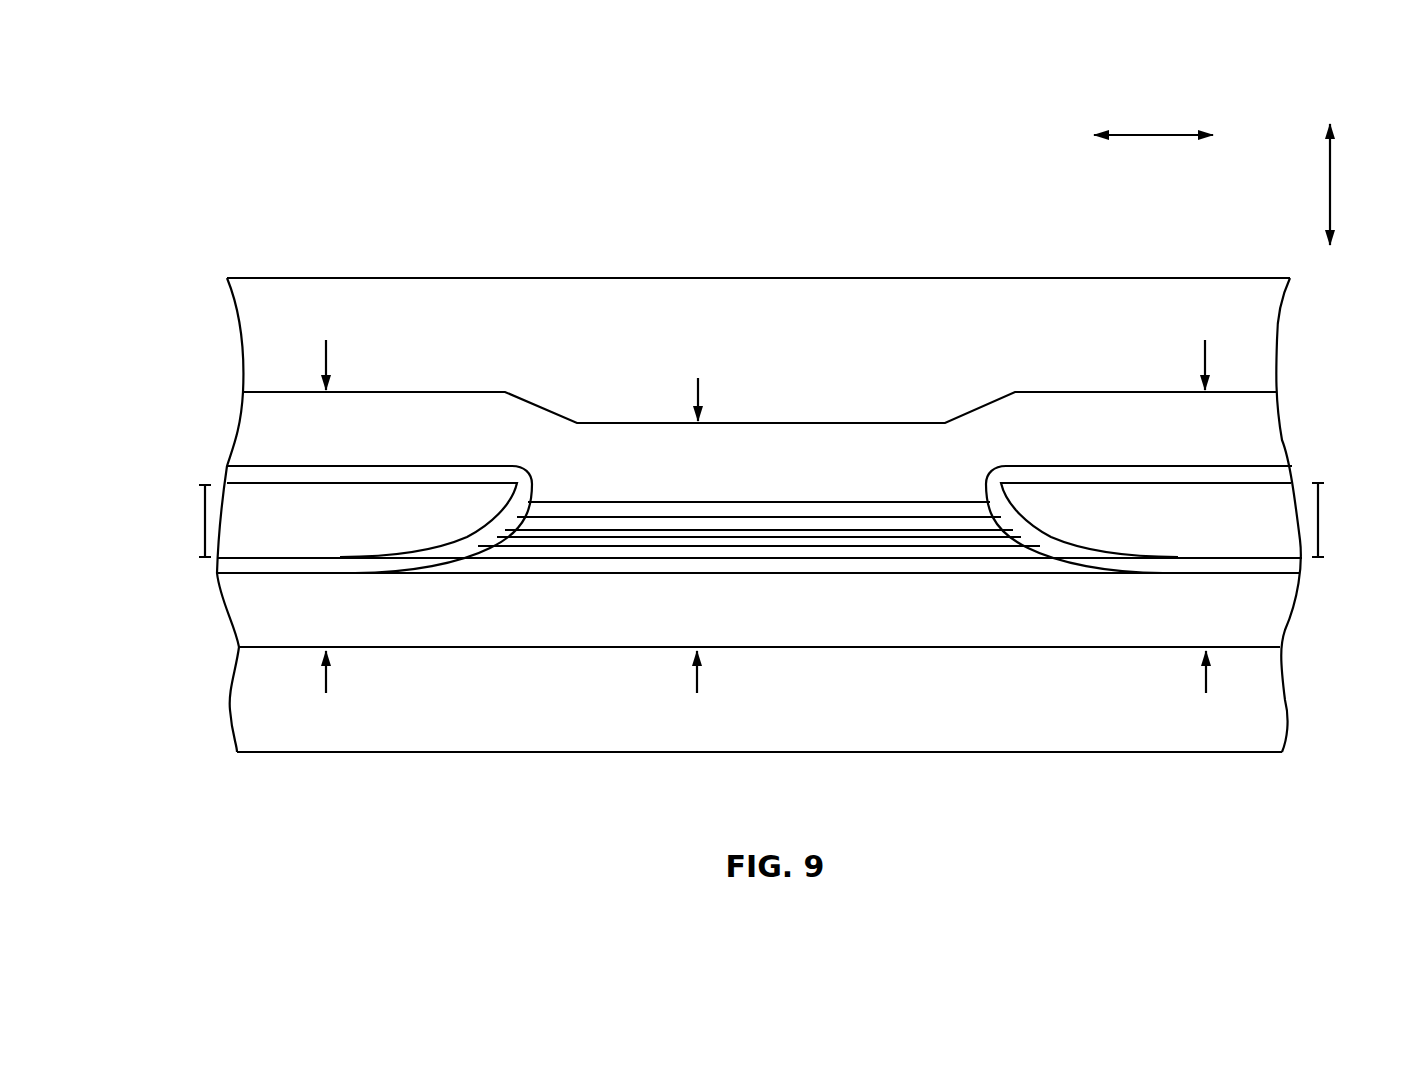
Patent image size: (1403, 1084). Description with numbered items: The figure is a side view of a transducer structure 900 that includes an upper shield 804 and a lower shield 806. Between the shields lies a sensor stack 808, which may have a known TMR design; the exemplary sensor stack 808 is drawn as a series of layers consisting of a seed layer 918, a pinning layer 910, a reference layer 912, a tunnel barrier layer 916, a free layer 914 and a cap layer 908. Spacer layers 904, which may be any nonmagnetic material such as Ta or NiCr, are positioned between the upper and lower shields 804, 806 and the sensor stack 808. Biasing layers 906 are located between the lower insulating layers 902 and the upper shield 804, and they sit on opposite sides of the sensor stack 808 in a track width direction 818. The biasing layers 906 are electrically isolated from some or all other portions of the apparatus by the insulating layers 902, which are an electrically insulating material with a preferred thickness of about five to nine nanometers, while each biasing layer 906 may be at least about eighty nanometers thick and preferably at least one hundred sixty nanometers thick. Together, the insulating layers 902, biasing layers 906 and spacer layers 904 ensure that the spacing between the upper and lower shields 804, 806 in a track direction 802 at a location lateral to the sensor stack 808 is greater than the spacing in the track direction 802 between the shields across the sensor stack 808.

The transducer structure 900 is at (272, 183).
The track direction 802 is at (1330, 176).
The track width direction 818 is at (1155, 135).
The upper shield 804 is at (1277, 330).
The lower shield 806 is at (1287, 700).
The sensor stack 808 is at (861, 461).
The insulating layers 902 is at (227, 466).
The spacer layers 904 is at (1278, 410).
The biasing layers 906 is at (759, 519).
The cap layer 908 is at (901, 514).
The pinning layer 910 is at (579, 560).
The reference layer 912 is at (619, 544).
The free layer 914 is at (843, 525).
The tunnel barrier layer 916 is at (799, 535).
The seed layer 918 is at (531, 570).